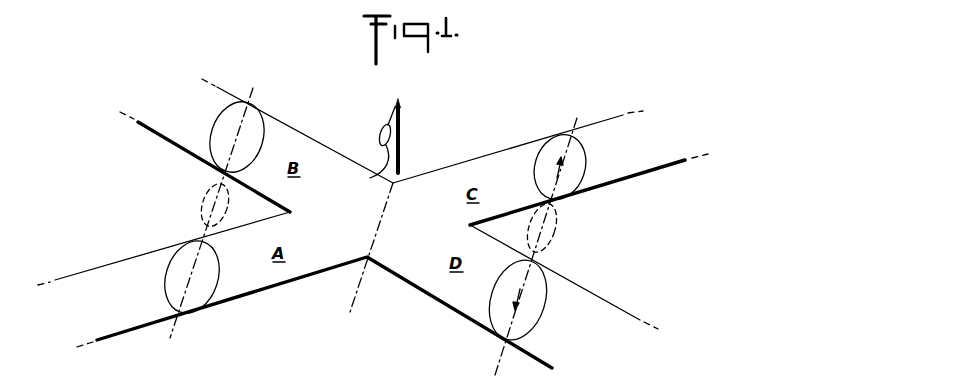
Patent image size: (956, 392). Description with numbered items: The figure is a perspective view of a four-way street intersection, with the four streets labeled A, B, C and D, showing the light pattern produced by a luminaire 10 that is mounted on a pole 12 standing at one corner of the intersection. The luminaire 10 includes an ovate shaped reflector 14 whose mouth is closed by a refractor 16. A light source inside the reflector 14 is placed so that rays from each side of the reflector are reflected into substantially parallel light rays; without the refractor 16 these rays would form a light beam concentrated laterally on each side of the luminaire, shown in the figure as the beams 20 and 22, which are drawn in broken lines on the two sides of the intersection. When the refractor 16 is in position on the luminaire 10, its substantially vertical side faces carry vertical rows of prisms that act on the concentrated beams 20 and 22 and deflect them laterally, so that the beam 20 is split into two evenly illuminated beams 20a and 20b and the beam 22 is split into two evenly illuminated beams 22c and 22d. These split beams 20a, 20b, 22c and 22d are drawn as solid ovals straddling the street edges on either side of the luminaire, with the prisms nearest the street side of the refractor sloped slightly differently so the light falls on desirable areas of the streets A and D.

The luminaire 10 is at (403, 130).
The pole 12 is at (395, 107).
The ovate shaped reflector 14 is at (382, 129).
The refractor 16 is at (371, 177).
The light beam 20 is at (207, 194).
The beam 20a is at (165, 283).
The beam 20b is at (222, 103).
The light beam 22 is at (555, 237).
The beam 22c is at (585, 158).
The beam 22d is at (543, 312).